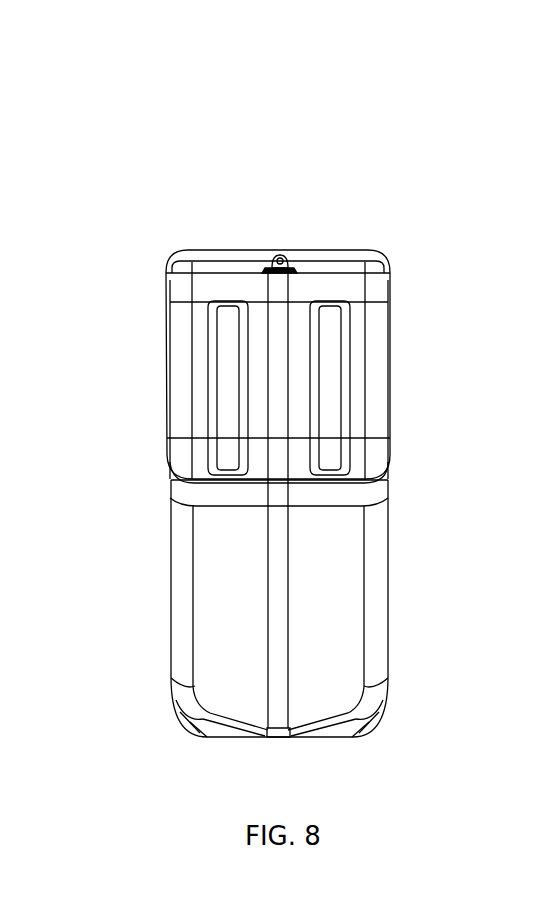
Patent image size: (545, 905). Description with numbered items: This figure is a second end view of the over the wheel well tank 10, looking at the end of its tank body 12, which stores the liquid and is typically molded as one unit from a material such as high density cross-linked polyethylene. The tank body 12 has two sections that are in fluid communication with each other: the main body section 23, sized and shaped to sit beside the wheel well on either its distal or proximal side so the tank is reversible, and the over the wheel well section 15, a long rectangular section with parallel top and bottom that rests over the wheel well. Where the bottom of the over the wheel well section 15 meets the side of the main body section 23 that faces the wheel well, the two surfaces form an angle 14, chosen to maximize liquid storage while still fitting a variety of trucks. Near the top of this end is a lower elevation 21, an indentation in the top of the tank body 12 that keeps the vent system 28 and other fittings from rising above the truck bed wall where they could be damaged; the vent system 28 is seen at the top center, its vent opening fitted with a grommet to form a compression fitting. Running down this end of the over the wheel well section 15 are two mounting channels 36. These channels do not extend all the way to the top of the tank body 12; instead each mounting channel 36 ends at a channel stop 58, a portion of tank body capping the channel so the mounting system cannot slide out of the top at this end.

The over the wheel well tank 10 is at (393, 163).
The tank body 12 is at (370, 600).
The angle 14 is at (373, 492).
The over the wheel well section 15 is at (383, 427).
The lower elevation 21 is at (347, 275).
The main body section 23 is at (372, 657).
The vent system 28 is at (283, 258).
The mounting channel 36 is at (228, 421).
The channel stop 58 is at (218, 284).